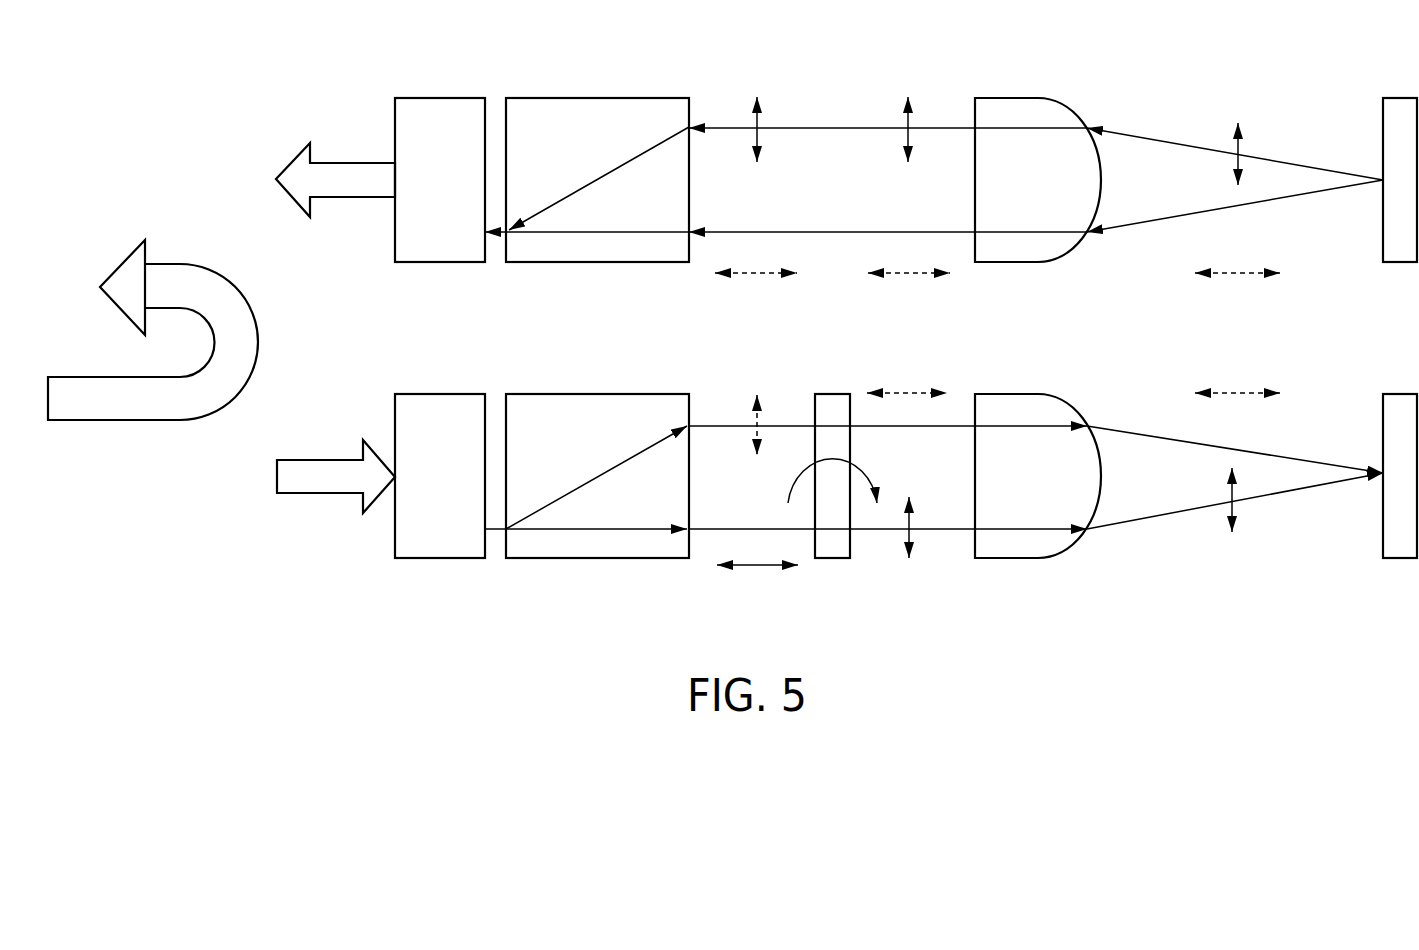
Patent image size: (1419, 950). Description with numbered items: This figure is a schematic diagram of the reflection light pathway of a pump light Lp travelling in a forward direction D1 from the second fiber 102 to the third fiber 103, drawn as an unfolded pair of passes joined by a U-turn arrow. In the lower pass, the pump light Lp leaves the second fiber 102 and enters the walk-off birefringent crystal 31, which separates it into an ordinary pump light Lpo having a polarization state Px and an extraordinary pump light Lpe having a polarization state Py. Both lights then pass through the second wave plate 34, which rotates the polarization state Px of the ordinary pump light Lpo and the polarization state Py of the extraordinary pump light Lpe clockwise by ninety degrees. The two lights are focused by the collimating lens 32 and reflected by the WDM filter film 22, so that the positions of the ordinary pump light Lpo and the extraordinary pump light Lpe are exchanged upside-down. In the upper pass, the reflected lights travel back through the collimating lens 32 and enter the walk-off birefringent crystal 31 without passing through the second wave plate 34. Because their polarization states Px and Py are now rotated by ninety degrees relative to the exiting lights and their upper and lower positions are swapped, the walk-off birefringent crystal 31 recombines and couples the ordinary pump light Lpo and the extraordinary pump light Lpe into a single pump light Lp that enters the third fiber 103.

The WDM filter film 22 is at (1402, 97).
The walk-off birefringent crystal 31 is at (547, 97).
The collimating lens 32 is at (1020, 97).
The second wave plate 34 is at (833, 560).
The second fiber 102 is at (440, 476).
The third fiber 103 is at (440, 180).
The pump light Lp is at (345, 177).
The extraordinary pump light Lpe is at (627, 160).
The ordinary pump light Lpo is at (562, 235).
The forward direction D1 is at (130, 407).
The polarization state Px is at (977, 331).
The polarization state Py is at (997, 347).